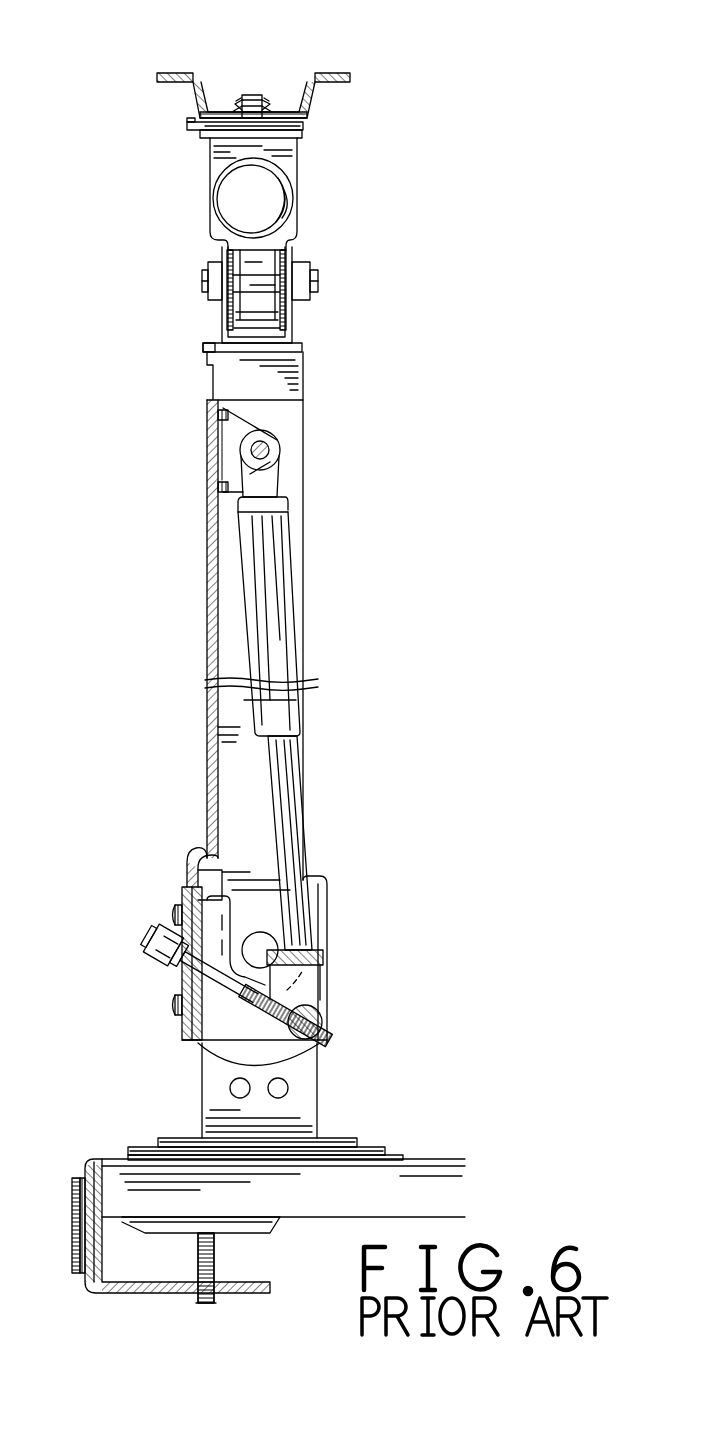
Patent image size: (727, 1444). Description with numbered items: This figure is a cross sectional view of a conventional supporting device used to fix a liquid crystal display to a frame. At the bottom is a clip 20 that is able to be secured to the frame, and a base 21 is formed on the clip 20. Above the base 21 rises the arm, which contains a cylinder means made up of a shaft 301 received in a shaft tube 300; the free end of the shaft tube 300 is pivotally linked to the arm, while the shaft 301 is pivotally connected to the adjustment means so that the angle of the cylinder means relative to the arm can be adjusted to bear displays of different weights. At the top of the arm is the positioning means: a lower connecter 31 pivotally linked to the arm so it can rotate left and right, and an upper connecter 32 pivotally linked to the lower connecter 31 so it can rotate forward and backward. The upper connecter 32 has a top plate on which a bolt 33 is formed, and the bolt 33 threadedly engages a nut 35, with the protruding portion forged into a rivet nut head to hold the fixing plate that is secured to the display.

The clip 20 is at (85, 1163).
The base 21 is at (323, 1096).
The lower connecter 31 is at (218, 229).
The upper connecter 32 is at (290, 156).
The bolt 33 is at (251, 96).
The nut 35 is at (268, 103).
The shaft tube 300 is at (283, 590).
The shaft 301 is at (288, 816).